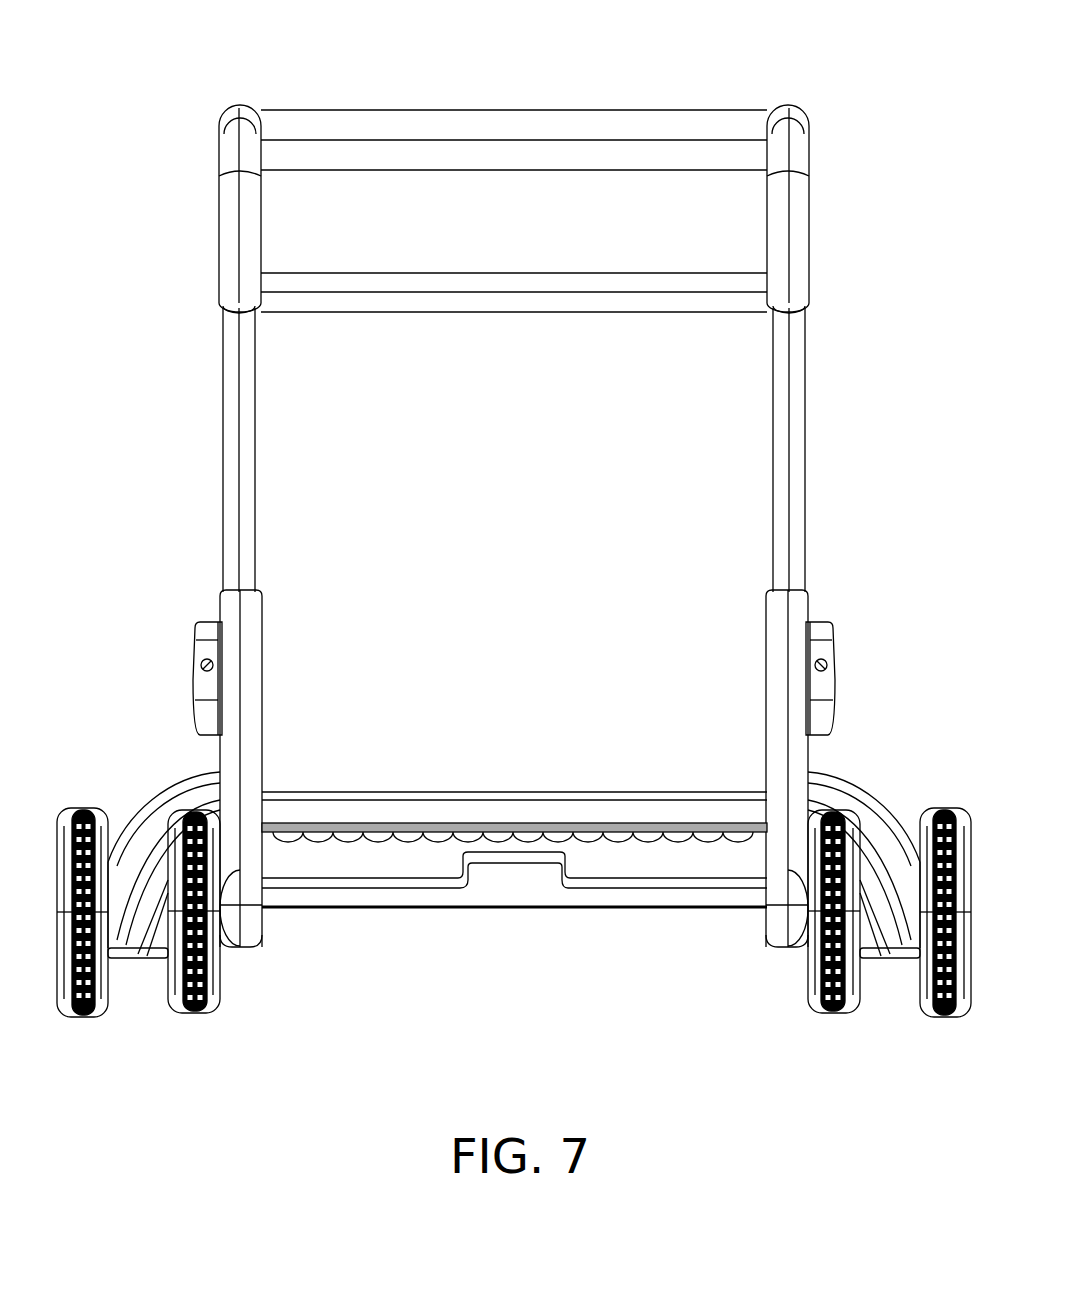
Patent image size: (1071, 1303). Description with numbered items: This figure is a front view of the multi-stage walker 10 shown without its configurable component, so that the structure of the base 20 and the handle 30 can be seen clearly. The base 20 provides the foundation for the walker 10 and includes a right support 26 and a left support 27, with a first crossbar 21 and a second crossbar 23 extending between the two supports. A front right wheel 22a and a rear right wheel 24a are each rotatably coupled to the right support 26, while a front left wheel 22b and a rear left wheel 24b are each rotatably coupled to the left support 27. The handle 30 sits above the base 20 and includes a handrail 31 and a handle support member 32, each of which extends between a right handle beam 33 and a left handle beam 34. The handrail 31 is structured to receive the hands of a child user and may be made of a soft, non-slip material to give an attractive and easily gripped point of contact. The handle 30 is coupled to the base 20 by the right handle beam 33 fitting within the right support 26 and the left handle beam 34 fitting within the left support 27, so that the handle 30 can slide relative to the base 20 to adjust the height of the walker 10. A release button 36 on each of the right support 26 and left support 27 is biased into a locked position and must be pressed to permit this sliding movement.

The multi-stage walker 10 is at (514, 577).
The base 20 is at (514, 838).
The first crossbar 21 is at (545, 909).
The front right wheel 22a is at (214, 1000).
The front left wheel 22b is at (818, 1015).
The second crossbar 23 is at (515, 790).
The rear right wheel 24a is at (97, 1006).
The rear left wheel 24b is at (937, 1015).
The right support 26 is at (221, 750).
The left support 27 is at (812, 757).
The handle 30 is at (514, 310).
The handrail 31 is at (390, 172).
The handle support member 32 is at (385, 313).
The right handle beam 33 is at (228, 342).
The left handle beam 34 is at (810, 362).
The release button 36 is at (197, 648).